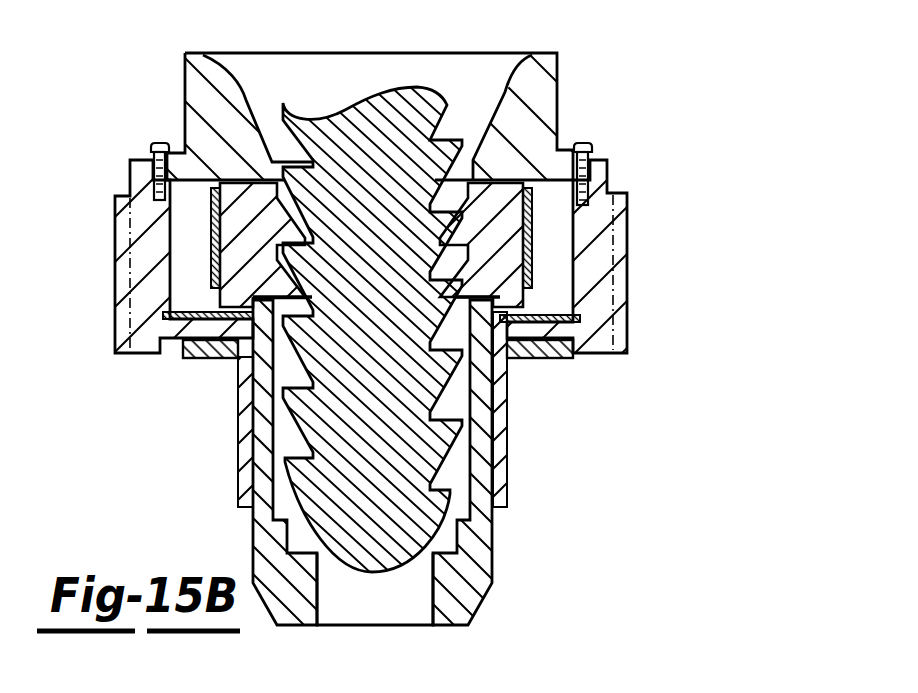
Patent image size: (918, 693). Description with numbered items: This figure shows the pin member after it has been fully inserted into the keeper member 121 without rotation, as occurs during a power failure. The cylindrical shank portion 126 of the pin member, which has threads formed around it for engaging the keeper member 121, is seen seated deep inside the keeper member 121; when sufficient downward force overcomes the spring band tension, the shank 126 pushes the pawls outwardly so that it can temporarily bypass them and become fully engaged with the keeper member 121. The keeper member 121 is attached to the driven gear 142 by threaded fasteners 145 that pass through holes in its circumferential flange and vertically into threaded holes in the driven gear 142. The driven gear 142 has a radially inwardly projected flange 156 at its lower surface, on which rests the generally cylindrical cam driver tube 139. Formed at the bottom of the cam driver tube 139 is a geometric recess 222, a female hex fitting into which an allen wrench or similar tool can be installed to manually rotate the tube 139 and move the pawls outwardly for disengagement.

The keeper member 121 is at (423, 340).
The shank portion 126 is at (443, 118).
The cam driver tube 139 is at (418, 485).
The driven gear 142 is at (610, 193).
The threaded fasteners 145 is at (588, 146).
The radially inwardly projected flange 156 is at (570, 358).
The geometric recess 222 is at (433, 597).